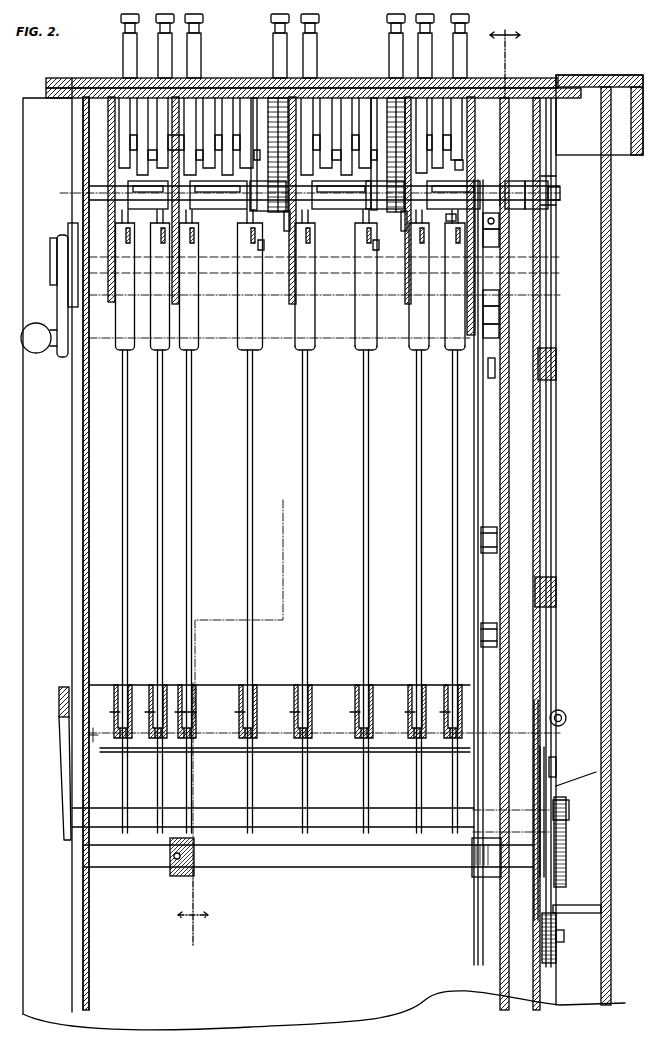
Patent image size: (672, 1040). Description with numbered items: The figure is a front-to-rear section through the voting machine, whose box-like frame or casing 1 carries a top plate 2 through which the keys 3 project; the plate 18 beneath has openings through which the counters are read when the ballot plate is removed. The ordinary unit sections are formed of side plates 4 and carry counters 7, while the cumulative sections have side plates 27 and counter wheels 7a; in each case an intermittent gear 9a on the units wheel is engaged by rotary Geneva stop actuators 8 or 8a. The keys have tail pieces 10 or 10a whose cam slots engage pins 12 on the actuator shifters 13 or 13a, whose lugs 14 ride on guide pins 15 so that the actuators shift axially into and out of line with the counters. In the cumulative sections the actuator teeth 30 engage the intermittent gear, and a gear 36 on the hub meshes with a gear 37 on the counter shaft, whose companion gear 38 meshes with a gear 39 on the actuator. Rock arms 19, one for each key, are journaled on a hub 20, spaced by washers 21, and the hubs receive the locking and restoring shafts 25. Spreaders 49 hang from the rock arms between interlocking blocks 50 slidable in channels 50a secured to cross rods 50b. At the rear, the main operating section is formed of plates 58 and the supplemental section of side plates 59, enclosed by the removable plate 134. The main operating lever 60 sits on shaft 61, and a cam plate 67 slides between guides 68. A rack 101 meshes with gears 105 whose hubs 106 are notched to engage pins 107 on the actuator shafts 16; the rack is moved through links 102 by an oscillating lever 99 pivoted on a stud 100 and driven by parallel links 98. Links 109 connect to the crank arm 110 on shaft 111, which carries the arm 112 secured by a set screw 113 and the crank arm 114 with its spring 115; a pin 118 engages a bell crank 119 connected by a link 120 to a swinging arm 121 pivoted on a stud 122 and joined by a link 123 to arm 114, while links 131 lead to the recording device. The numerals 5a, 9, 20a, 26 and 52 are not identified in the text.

The frame or casing 1 is at (72, 457).
The top plate 2 is at (225, 80).
The keys 3 is at (190, 30).
The keys 5a is at (272, 36).
The counters 7 is at (162, 100).
The counter wheels 7a is at (252, 100).
The connectors 9 is at (168, 140).
The intermittent gear 9a is at (152, 160).
The gear 37 is at (282, 104).
The gear 38 is at (254, 98).
The gear 36 is at (294, 215).
The pins 12 is at (505, 55).
The Geneva stop actuators 8 is at (458, 162).
The actuator shifters 13 is at (135, 214).
The actuator shifter 13a is at (246, 222).
The lugs 14 is at (163, 212).
The teeth 30 is at (256, 212).
The gear 39 is at (287, 236).
The guide pins 15 is at (447, 221).
The gears 105 is at (500, 184).
The hubs 106 is at (548, 208).
The actuator shafts 16 is at (562, 188).
The pins 107 is at (548, 176).
The plate 18 is at (470, 82).
The rock arms 19 is at (130, 244).
The Geneva stop actuators 8a is at (260, 250).
The washers 21 is at (238, 268).
The hub 20 is at (150, 274).
The line 20a is at (250, 296).
The side plates 27 is at (258, 300).
The side plates 4 is at (160, 297).
The tail pieces 10 is at (130, 350).
The tail pieces 10a is at (238, 350).
The spreaders 49 is at (160, 568).
The lever 26 is at (57, 297).
The locking and restoring shafts 25 is at (548, 265).
The rack 101 is at (499, 216).
The links 102 is at (499, 240).
The stud 100 is at (499, 300).
The oscillating lever 99 is at (499, 320).
The parallel links 98 is at (499, 335).
The guides 68 is at (556, 375).
The cam plate 67 is at (551, 432).
The removable plate 134 is at (611, 478).
The plates 58 is at (540, 478).
The side plates 59 is at (500, 440).
The links 109 is at (481, 530).
The crank arm 110 is at (474, 607).
The links 131 is at (497, 630).
The interlocking blocks 50 is at (150, 738).
The guides or channels 50a is at (150, 685).
The cross rods 50b is at (296, 685).
The bar 52 is at (175, 745).
The shaft 61 is at (270, 816).
The shaft 111 is at (266, 860).
The arm 112 is at (193, 794).
The set screw 113 is at (170, 866).
The main operating lever 60 is at (59, 740).
The spring 115 is at (565, 708).
The pin 118 is at (548, 800).
The crank arm 114 is at (556, 766).
The bell crank 119 is at (566, 862).
The link 120 is at (556, 945).
The swinging arm 121 is at (542, 930).
The stud 122 is at (582, 905).
The link 123 is at (592, 776).